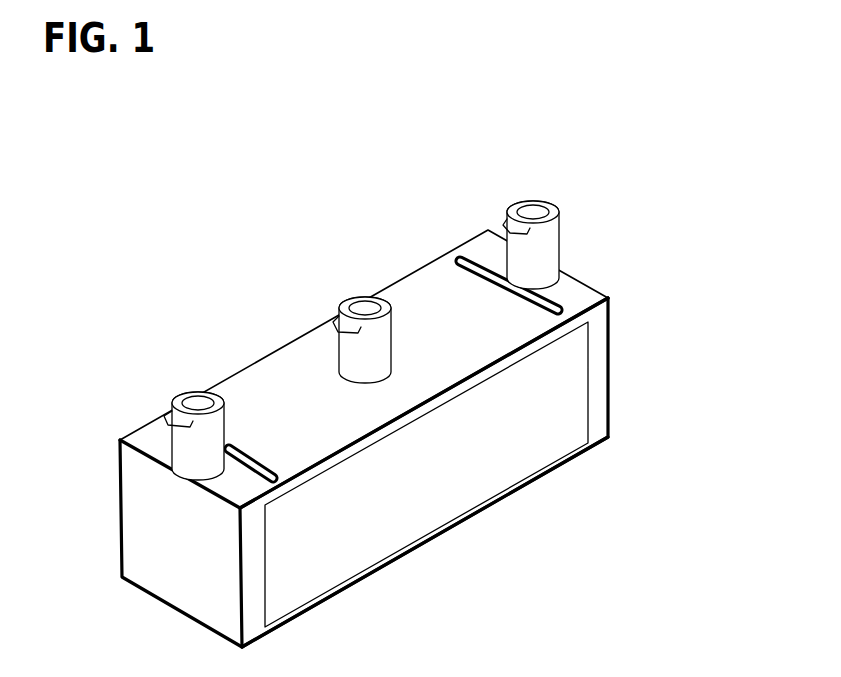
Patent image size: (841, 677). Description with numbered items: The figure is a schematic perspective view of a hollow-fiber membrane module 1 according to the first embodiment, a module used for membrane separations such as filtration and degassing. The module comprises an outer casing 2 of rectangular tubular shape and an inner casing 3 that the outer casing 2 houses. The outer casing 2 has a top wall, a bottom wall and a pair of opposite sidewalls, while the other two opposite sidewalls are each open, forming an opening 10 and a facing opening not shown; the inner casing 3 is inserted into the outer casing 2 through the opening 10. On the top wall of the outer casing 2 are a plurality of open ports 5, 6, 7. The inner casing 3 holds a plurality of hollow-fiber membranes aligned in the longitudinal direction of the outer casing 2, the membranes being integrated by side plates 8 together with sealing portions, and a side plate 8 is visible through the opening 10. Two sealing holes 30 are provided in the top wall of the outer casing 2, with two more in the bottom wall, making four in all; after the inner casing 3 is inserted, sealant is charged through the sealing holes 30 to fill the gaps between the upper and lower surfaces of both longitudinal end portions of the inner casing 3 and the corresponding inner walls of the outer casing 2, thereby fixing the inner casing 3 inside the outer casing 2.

The hollow-fiber membrane module 1 is at (655, 160).
The outer casing 2 is at (568, 247).
The inner casing 3 is at (590, 356).
The open port 5 is at (182, 446).
The open port 6 is at (345, 337).
The open port 7 is at (550, 238).
The side plate 8 is at (528, 448).
The opening 10 is at (412, 545).
The sealing hole 30 is at (237, 445).